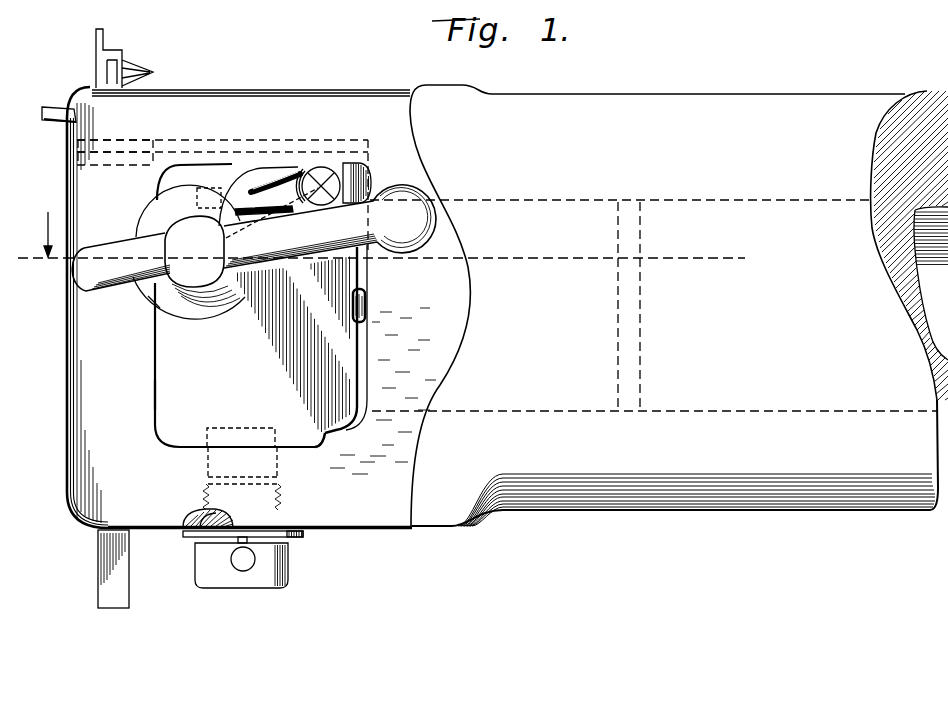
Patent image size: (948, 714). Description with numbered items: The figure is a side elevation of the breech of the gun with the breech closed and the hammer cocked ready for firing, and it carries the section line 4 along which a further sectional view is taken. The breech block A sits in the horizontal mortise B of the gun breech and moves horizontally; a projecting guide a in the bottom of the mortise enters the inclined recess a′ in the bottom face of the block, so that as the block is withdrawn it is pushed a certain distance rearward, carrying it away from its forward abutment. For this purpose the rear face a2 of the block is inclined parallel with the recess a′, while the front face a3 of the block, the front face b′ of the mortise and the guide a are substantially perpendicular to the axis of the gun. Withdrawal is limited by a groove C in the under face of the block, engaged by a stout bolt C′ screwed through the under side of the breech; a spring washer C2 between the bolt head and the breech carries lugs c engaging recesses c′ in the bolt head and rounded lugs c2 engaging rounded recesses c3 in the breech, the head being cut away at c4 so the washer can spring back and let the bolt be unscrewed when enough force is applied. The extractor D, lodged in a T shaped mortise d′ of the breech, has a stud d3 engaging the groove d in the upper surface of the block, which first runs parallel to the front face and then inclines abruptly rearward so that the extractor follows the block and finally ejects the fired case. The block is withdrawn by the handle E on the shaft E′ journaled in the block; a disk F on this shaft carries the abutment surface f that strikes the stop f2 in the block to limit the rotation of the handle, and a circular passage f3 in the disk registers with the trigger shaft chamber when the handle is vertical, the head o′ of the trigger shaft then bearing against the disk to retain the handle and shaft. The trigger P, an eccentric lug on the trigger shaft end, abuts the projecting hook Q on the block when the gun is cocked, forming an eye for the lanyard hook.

The breech mortise B is at (373, 370).
The section line 4 4 is at (381, 242).
The extractor D is at (193, 147).
The T shaped mortise d′ is at (109, 153).
The breech block A is at (261, 305).
The rear face of the breech block a2 is at (370, 187).
The front face of the breech block a3 is at (360, 337).
The recess in the bottom face of the breech block a′ is at (326, 432).
The projecting guide a is at (330, 436).
The front face of the gun-breech mortise b′ is at (371, 278).
The trigger shaft head o′ is at (241, 170).
The groove in the upper surface of the breech block d is at (293, 160).
The stud of the extractor d3 is at (301, 167).
The trigger P is at (324, 182).
The projecting hook Q is at (357, 167).
The abutment surface f is at (172, 202).
The stop f2 is at (210, 195).
The disk F is at (165, 296).
The handle E is at (254, 238).
The shaft E′ is at (194, 251).
The circular passage f3 is at (238, 290).
The groove C is at (207, 437).
The rounded lugs c2 is at (195, 515).
The rounded recesses c3 is at (183, 526).
The cut-away of the bolt head c4 is at (300, 526).
The spring washer C2 is at (296, 538).
The lugs c is at (240, 541).
The bolt C′ is at (228, 582).
The recesses in the bolt head c′ is at (255, 547).